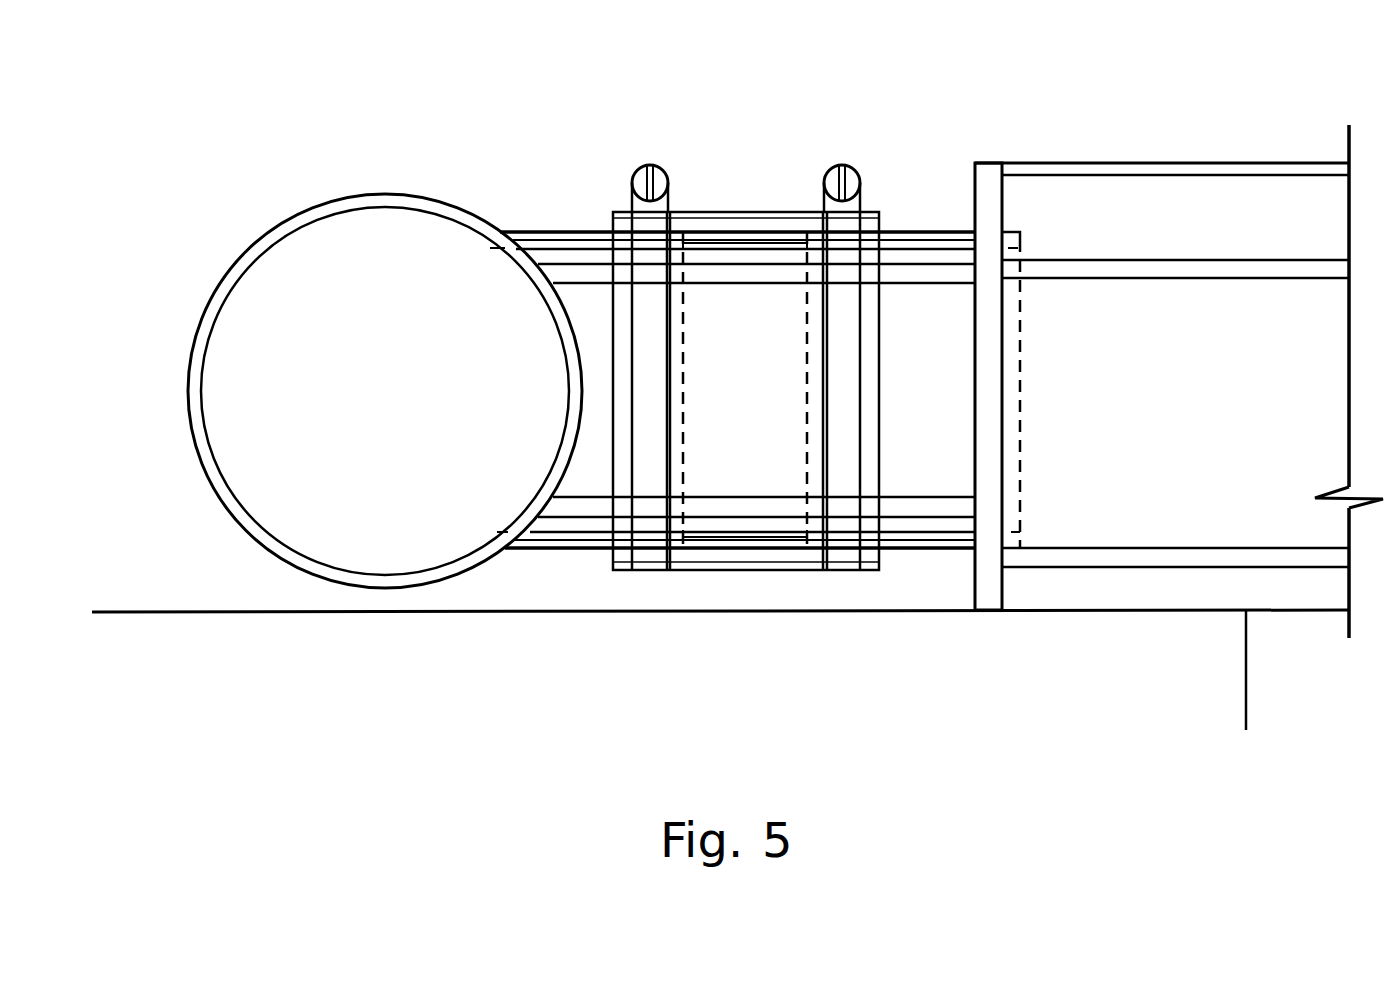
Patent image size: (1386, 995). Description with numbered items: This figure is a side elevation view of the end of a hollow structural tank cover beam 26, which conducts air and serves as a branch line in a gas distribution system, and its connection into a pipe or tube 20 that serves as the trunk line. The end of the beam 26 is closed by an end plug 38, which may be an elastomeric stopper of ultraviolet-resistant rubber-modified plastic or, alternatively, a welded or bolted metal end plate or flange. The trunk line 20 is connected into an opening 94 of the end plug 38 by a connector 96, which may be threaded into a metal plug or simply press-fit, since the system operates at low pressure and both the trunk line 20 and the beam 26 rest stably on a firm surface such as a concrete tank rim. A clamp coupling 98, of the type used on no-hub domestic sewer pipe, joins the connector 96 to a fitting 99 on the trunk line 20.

The pipe or tube 20 is at (402, 203).
The air-conducting beam 26 is at (1265, 182).
The end plug 38 is at (980, 592).
The opening 94 is at (1010, 327).
The connector 96 is at (927, 235).
The clamp coupling 98 is at (747, 207).
The fitting 99 is at (555, 228).